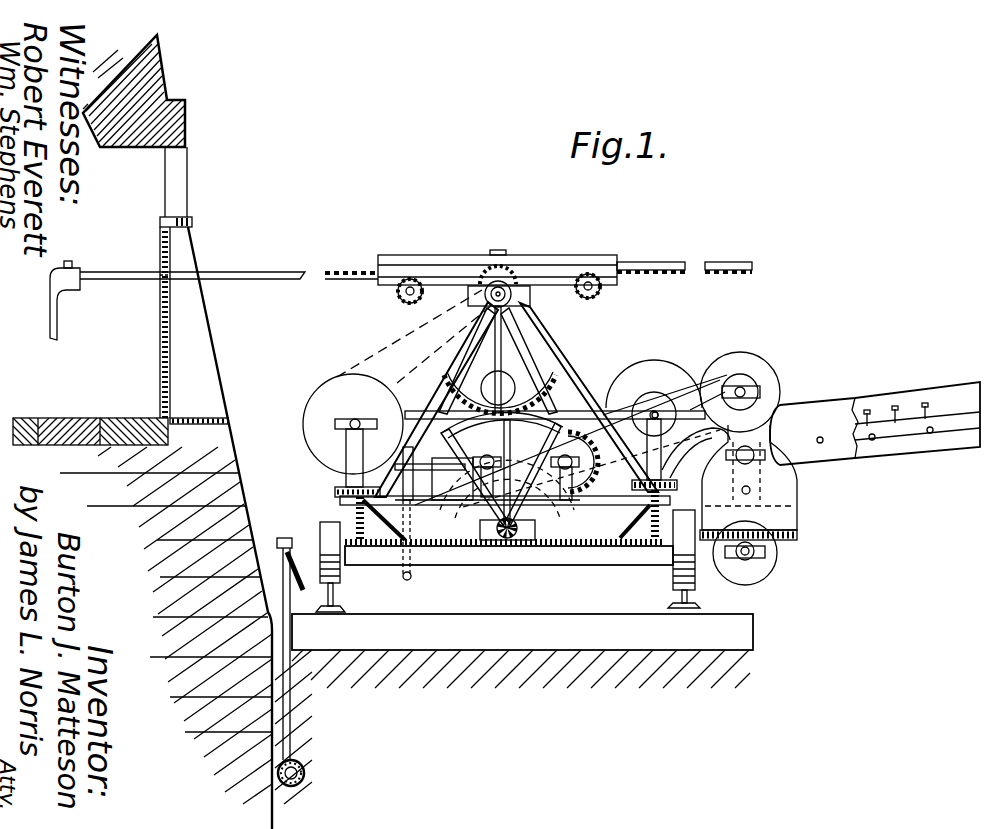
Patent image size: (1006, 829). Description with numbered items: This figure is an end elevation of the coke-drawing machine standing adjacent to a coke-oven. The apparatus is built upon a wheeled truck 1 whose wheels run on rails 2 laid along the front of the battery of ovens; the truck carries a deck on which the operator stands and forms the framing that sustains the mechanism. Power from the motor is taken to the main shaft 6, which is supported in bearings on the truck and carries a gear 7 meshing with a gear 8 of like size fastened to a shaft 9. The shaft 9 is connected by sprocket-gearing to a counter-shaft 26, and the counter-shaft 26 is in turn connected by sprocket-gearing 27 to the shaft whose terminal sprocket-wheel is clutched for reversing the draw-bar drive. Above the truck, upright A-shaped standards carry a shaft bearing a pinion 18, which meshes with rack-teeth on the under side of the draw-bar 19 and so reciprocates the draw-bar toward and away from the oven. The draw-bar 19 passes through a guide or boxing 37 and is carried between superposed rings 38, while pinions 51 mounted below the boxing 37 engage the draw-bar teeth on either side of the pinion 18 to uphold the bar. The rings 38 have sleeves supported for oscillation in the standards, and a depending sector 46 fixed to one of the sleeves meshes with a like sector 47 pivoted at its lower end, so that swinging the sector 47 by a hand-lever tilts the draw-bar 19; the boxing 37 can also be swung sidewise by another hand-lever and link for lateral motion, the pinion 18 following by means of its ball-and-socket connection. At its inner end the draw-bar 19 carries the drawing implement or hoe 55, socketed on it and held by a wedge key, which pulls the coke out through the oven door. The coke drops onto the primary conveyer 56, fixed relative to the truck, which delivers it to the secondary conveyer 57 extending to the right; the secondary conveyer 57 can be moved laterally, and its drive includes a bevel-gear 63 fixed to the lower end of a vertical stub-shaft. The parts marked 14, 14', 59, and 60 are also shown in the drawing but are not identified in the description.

The wheeled truck 1 is at (625, 556).
The rails 2 is at (340, 600).
The main shaft 6 is at (572, 480).
The gear 7 is at (598, 472).
The gear 8 is at (430, 470).
The shaft 9 is at (480, 498).
The left inclined frame bar 14 is at (436, 399).
The right inclined frame bar 14' is at (589, 397).
The pinion 18 is at (512, 292).
The draw-bar 19 is at (704, 266).
The counter-shaft 26 is at (354, 457).
The sprocket-gearing 27 is at (400, 345).
The guide or boxing 37 is at (586, 256).
The superposed rings 38 is at (648, 258).
The depending sector 46 is at (500, 380).
The sector 47 is at (507, 476).
The pinions 51 is at (600, 288).
The drawing implement or hoe 55 is at (177, 300).
The primary conveyer 56 is at (725, 385).
The secondary conveyer 57 is at (920, 432).
The wheel 59 is at (777, 560).
The wheel hub 60 is at (750, 560).
The bevel-gear 63 is at (797, 537).